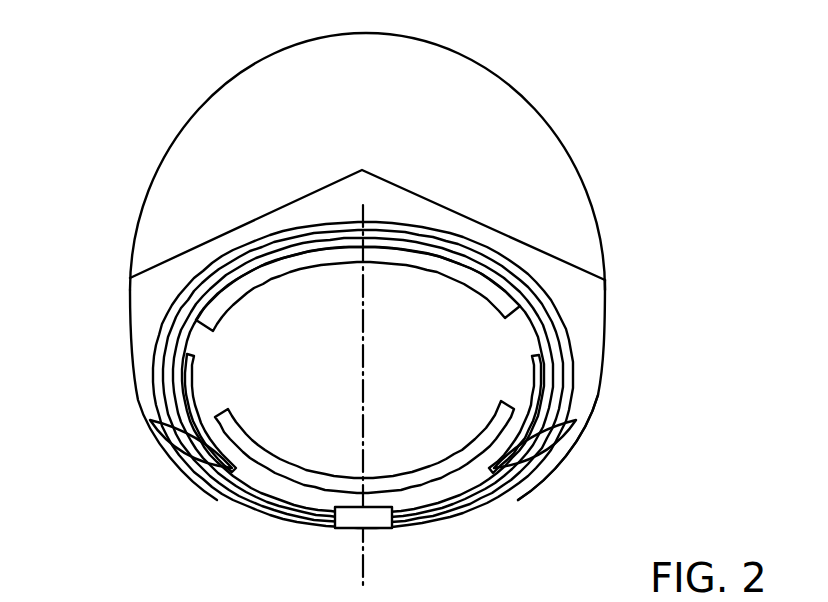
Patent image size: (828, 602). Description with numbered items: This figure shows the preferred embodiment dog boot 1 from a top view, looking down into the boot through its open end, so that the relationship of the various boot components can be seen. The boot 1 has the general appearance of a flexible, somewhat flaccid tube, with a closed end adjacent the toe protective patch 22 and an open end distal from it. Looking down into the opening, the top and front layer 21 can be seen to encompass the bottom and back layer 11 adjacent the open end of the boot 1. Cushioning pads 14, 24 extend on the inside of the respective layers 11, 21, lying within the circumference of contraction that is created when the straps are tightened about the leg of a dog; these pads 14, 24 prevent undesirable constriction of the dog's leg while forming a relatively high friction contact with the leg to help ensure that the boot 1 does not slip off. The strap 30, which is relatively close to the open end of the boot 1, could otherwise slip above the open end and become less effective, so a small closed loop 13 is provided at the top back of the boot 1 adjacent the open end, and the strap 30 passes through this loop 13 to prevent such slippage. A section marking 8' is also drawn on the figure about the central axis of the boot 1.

The protective helmet 1 is at (108, 66).
The outer shell 22 is at (538, 124).
The annular guide rings 21 is at (601, 346).
The upper holding bracket 24 is at (450, 262).
The lower holding bracket 14 is at (436, 468).
The fastening clips 11 is at (195, 397).
The locking tab 13 is at (350, 524).
The rim of shell opening 30 is at (567, 420).
The section line arrows 8' is at (327, 392).